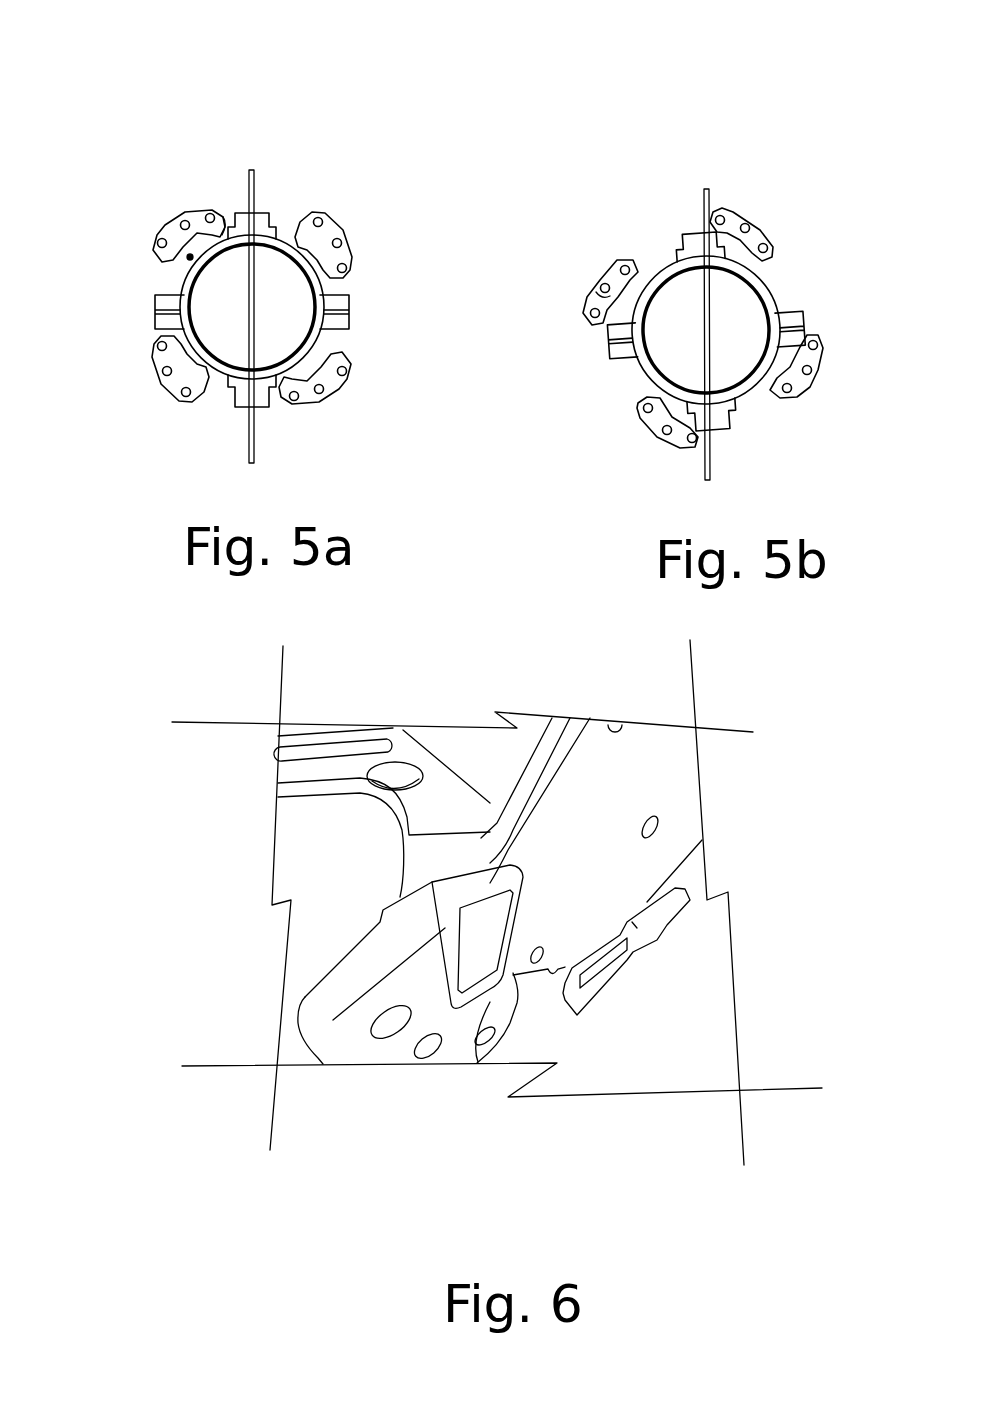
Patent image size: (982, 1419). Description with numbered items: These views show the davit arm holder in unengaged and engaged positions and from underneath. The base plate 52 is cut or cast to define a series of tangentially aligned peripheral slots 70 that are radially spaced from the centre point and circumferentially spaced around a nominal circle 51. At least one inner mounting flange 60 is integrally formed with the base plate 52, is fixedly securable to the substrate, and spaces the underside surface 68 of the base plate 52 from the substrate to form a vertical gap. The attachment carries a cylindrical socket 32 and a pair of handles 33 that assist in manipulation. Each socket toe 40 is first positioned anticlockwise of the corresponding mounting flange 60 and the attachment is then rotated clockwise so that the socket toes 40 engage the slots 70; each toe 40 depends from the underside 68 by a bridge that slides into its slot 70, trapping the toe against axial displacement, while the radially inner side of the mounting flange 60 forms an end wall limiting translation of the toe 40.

In FIG. 5A, the cylindrical socket 32 is at (200, 352).
In FIG. 5B, the cylindrical socket 32 is at (683, 268).
In FIG. 5A, the handles 33 is at (256, 183).
In FIG. 5B, the handles 33 is at (702, 205).
In FIG. 5B, the socket toe 40 is at (595, 290).
In FIG. 6, the socket toe 40 is at (490, 1002).
In FIG. 5A, the nominal circle 51 is at (223, 215).
In FIG. 6, the base plate 52 is at (400, 908).
In FIG. 5A, the inner mounting flange 60 is at (192, 210).
In FIG. 5B, the inner mounting flange 60 is at (615, 262).
In FIG. 6, the inner mounting flange 60 is at (343, 1043).
In FIG. 6, the underside surface 68 is at (577, 1030).
In FIG. 5A, the slots 70 is at (186, 253).